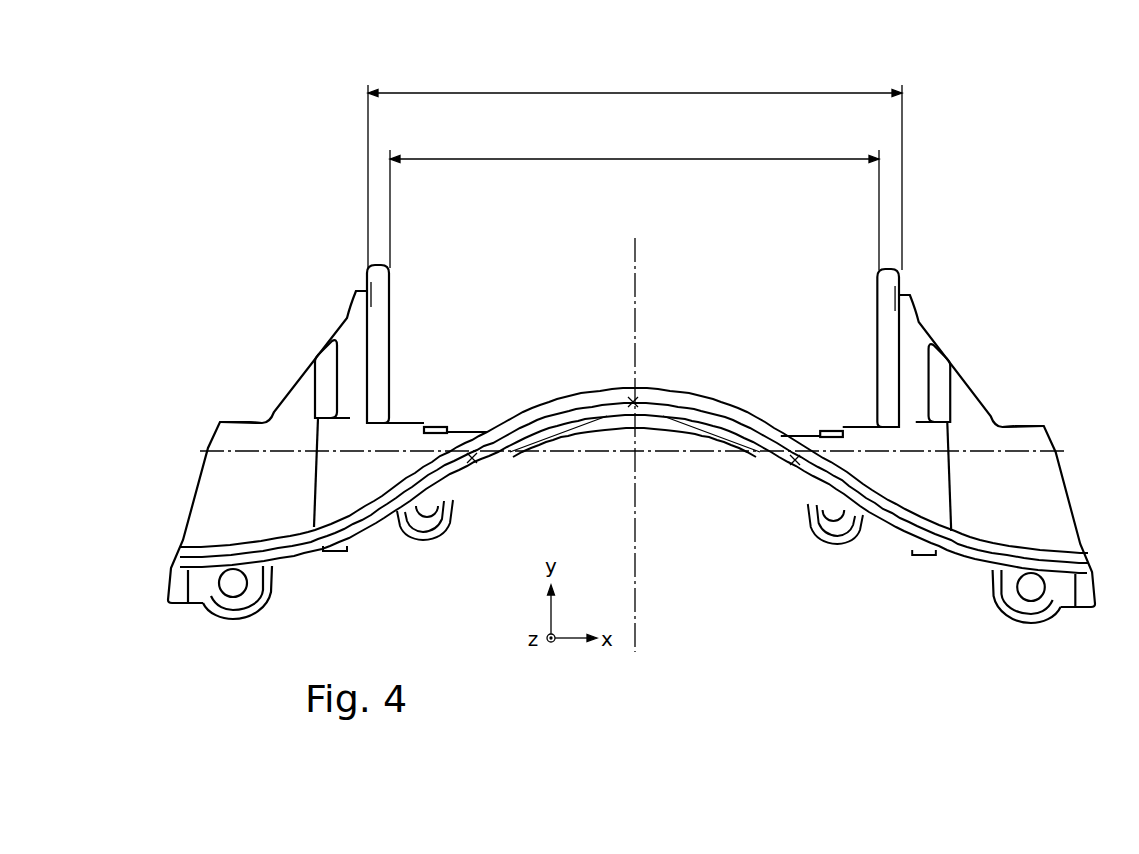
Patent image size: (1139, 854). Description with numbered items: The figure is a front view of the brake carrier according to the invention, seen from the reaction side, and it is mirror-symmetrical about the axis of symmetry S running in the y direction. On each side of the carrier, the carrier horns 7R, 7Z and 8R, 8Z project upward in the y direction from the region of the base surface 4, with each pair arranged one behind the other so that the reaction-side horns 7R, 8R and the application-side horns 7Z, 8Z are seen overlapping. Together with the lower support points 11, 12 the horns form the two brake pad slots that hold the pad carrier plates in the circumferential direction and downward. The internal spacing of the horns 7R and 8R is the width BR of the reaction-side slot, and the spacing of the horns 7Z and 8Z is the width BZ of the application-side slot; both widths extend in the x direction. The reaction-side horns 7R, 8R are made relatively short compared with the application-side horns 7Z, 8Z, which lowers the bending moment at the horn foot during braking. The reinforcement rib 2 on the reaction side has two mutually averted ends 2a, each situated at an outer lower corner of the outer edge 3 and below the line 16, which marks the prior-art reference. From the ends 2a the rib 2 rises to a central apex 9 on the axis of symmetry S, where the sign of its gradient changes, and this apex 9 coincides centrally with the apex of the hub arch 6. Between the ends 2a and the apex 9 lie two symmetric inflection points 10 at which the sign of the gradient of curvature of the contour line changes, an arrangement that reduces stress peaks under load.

The reinforcement rib 2 is at (507, 440).
The end of the reinforcement rib 2a is at (183, 555).
The outer edge 3 is at (190, 458).
The base surface 4 is at (236, 406).
The hub arch 6 is at (695, 453).
The reaction-side carrier horn 7R is at (353, 332).
The application-side carrier horn 7Z is at (377, 392).
The reaction-side carrier horn 8R is at (908, 370).
The application-side carrier horn 8Z is at (883, 408).
The apex 9 is at (627, 379).
The inflection point 10 is at (484, 474).
The support point 11 is at (418, 412).
The support point 12 is at (843, 421).
The line 16 is at (283, 450).
The axis of symmetry S is at (633, 605).
The width of the reaction-side brake pad slot BR is at (663, 93).
The width of the application-side brake pad slot BZ is at (648, 159).